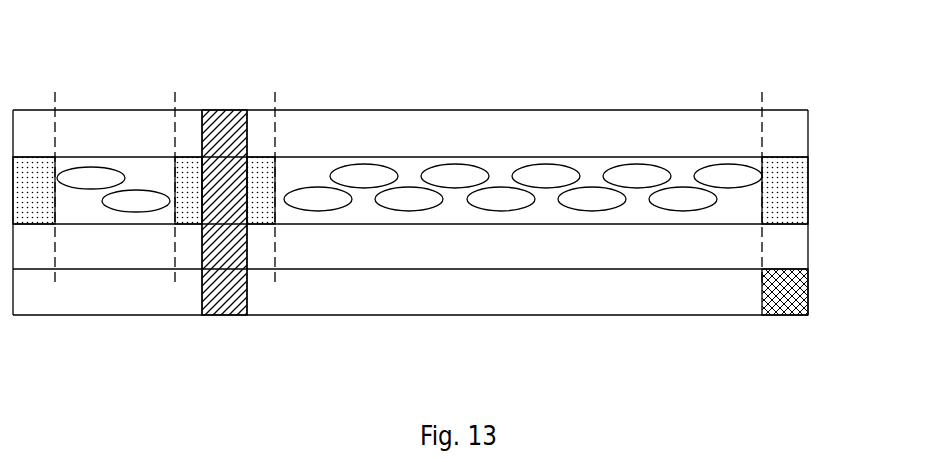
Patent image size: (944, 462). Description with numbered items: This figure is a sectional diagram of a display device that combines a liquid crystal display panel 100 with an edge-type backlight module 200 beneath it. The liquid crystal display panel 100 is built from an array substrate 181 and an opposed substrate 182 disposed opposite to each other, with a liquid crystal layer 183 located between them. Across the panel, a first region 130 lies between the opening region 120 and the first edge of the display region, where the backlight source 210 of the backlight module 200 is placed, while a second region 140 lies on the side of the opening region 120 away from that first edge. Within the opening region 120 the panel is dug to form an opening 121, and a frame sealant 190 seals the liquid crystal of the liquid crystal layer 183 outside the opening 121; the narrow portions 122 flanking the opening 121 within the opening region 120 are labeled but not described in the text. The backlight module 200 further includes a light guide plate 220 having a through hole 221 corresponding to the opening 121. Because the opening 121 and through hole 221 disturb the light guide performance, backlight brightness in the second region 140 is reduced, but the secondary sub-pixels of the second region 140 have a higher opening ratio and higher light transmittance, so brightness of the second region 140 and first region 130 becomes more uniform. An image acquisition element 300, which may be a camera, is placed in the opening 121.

The liquid crystal display panel 100 is at (829, 110).
The edge-type backlight module 200 is at (826, 268).
The opening region 120 is at (275, 53).
The opening 121 is at (247, 88).
The transition region 122 is at (202, 89).
The first region 130 is at (175, 93).
The second region 140 is at (762, 94).
The array substrate 181 is at (650, 256).
The opposed substrate 182 is at (320, 138).
The liquid crystal layer 183 is at (590, 170).
The frame sealant 190 is at (195, 207).
The backlight source 210 is at (778, 302).
The light guide plate 220 is at (486, 295).
The through hole 221 is at (224, 303).
The image acquisition element 300 is at (227, 243).